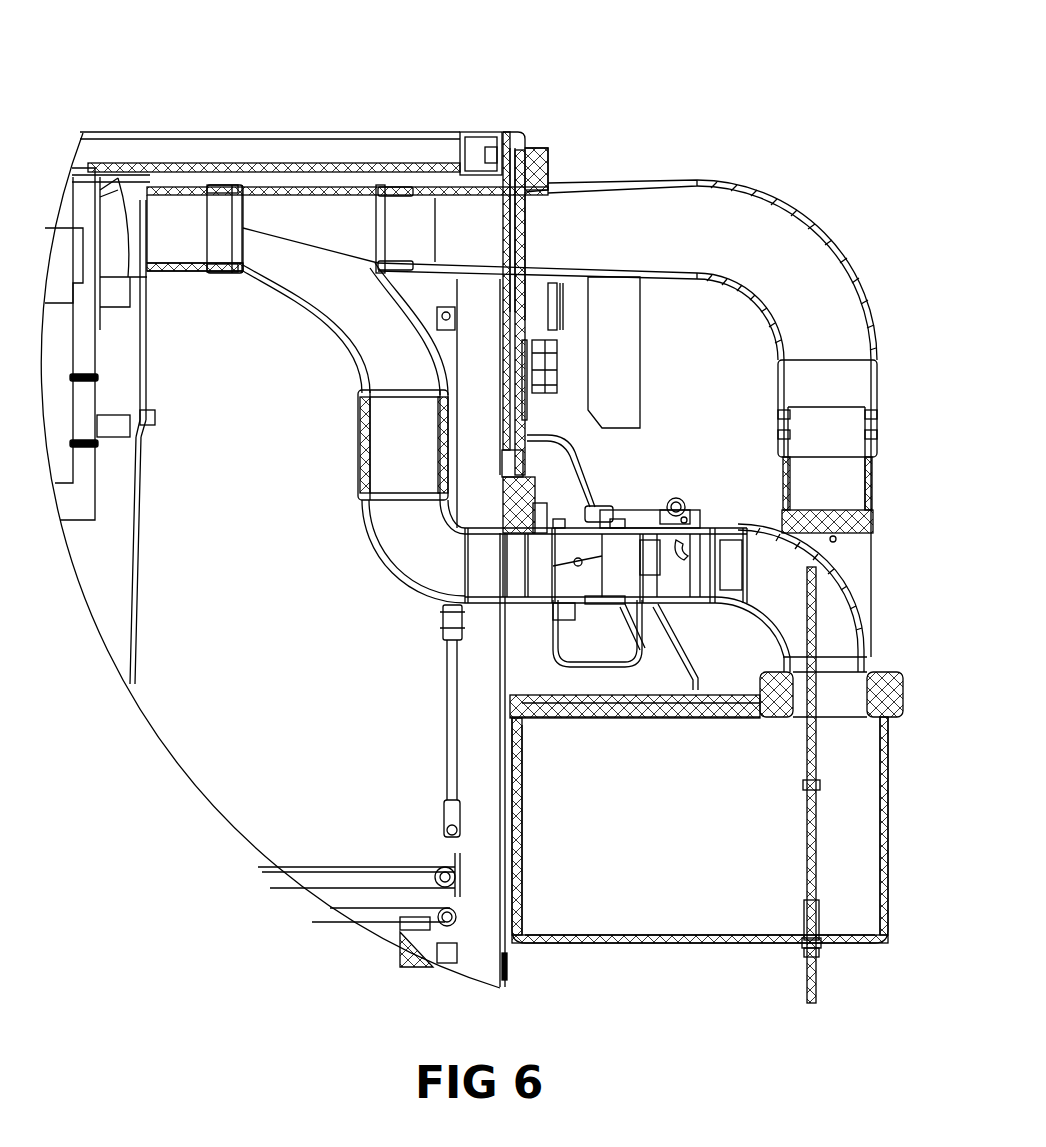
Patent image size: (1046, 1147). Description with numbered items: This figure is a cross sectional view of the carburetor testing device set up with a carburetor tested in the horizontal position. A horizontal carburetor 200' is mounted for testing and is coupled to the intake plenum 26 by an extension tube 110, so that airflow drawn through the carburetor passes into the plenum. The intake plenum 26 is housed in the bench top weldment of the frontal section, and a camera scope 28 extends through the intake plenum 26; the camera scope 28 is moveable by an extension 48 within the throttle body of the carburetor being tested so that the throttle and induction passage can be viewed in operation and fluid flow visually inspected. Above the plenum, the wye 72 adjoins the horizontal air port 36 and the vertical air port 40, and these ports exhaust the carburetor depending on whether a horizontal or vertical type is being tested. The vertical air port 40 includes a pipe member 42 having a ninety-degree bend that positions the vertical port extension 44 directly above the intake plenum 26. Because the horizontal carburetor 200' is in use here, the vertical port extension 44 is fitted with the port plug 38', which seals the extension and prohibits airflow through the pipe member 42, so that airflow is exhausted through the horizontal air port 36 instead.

The wye 72 is at (314, 190).
The vertical air port 40 is at (548, 150).
The pipe member 42 is at (815, 218).
The horizontal air port 36 is at (513, 533).
The horizontal carburetor 200' is at (606, 527).
The vertical port extension 44 is at (870, 487).
The port plug 38' is at (874, 529).
The extension tube 110 is at (857, 612).
The camera scope 28 is at (810, 572).
The intake plenum 26 is at (880, 673).
The extension 48 is at (817, 977).